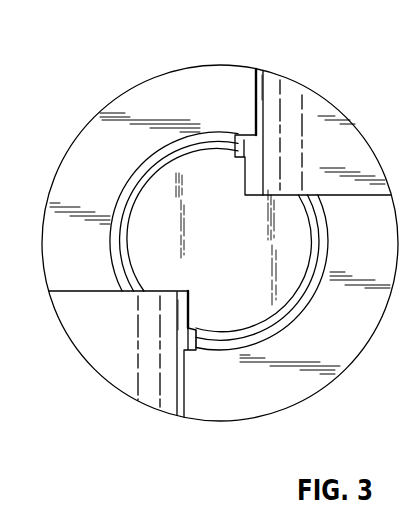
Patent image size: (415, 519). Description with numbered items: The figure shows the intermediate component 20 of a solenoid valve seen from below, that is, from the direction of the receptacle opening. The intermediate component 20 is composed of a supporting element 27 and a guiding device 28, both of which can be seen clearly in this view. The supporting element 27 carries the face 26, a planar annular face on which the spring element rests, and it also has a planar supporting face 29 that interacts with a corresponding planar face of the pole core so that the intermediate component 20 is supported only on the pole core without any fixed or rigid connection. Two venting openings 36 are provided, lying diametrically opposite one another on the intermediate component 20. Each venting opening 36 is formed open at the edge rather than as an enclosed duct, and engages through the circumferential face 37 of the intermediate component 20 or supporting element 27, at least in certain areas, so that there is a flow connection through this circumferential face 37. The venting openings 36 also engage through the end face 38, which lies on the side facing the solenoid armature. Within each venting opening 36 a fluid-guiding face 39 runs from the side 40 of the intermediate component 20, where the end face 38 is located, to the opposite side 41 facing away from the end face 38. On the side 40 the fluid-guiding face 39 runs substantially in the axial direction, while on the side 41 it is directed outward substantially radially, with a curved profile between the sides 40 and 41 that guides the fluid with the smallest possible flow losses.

The intermediate component 20 is at (62, 106).
The face 26 is at (93, 174).
The supporting element 27 is at (150, 107).
The guiding device 28 is at (285, 283).
The supporting face 29 is at (392, 322).
The venting opening 36 is at (320, 133).
The circumferential face 37 is at (201, 61).
The end face 38 is at (222, 318).
The fluid-guiding face 39 is at (276, 117).
The side 40 is at (263, 308).
The side 41 is at (377, 149).